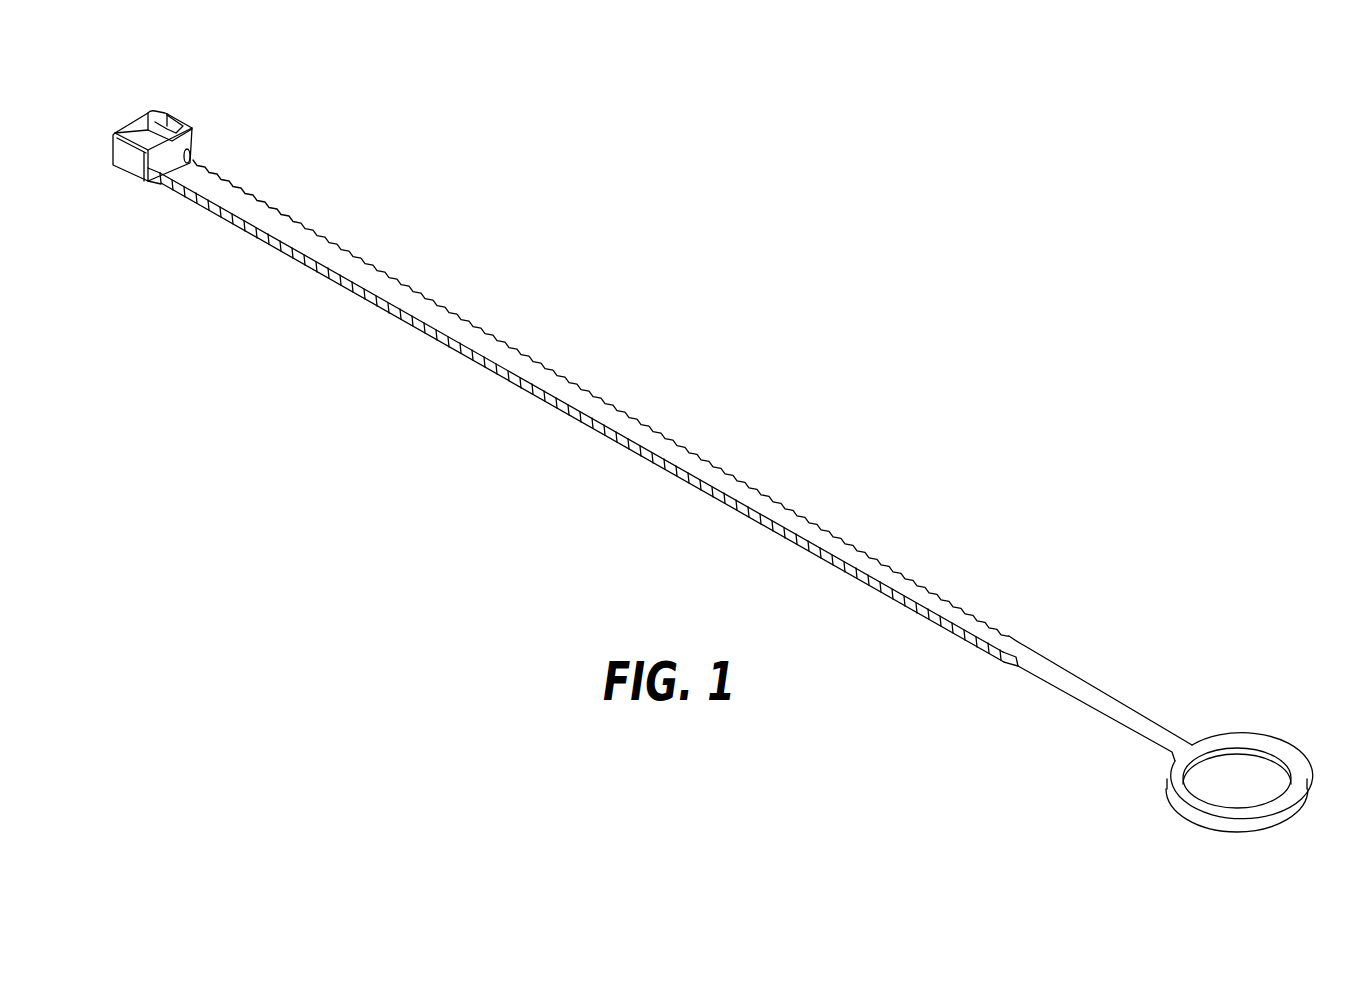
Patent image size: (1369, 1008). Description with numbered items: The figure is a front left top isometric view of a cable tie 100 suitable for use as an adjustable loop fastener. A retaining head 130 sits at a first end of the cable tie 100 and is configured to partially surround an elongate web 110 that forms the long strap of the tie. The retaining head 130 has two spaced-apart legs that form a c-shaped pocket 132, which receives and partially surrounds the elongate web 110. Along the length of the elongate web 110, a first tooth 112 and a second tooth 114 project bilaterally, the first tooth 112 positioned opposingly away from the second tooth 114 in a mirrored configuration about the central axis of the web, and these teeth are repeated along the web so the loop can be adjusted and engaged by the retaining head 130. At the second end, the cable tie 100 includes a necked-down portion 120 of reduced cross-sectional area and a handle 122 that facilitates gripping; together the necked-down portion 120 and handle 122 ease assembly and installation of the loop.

The cable tie 100 is at (813, 303).
The elongate web 110 is at (533, 362).
The first tooth 112 is at (698, 461).
The second tooth 114 is at (679, 475).
The necked-down portion 120 is at (1098, 694).
The handle 122 is at (1297, 756).
The retaining head 130 is at (189, 124).
The c-shaped pocket 132 is at (146, 127).